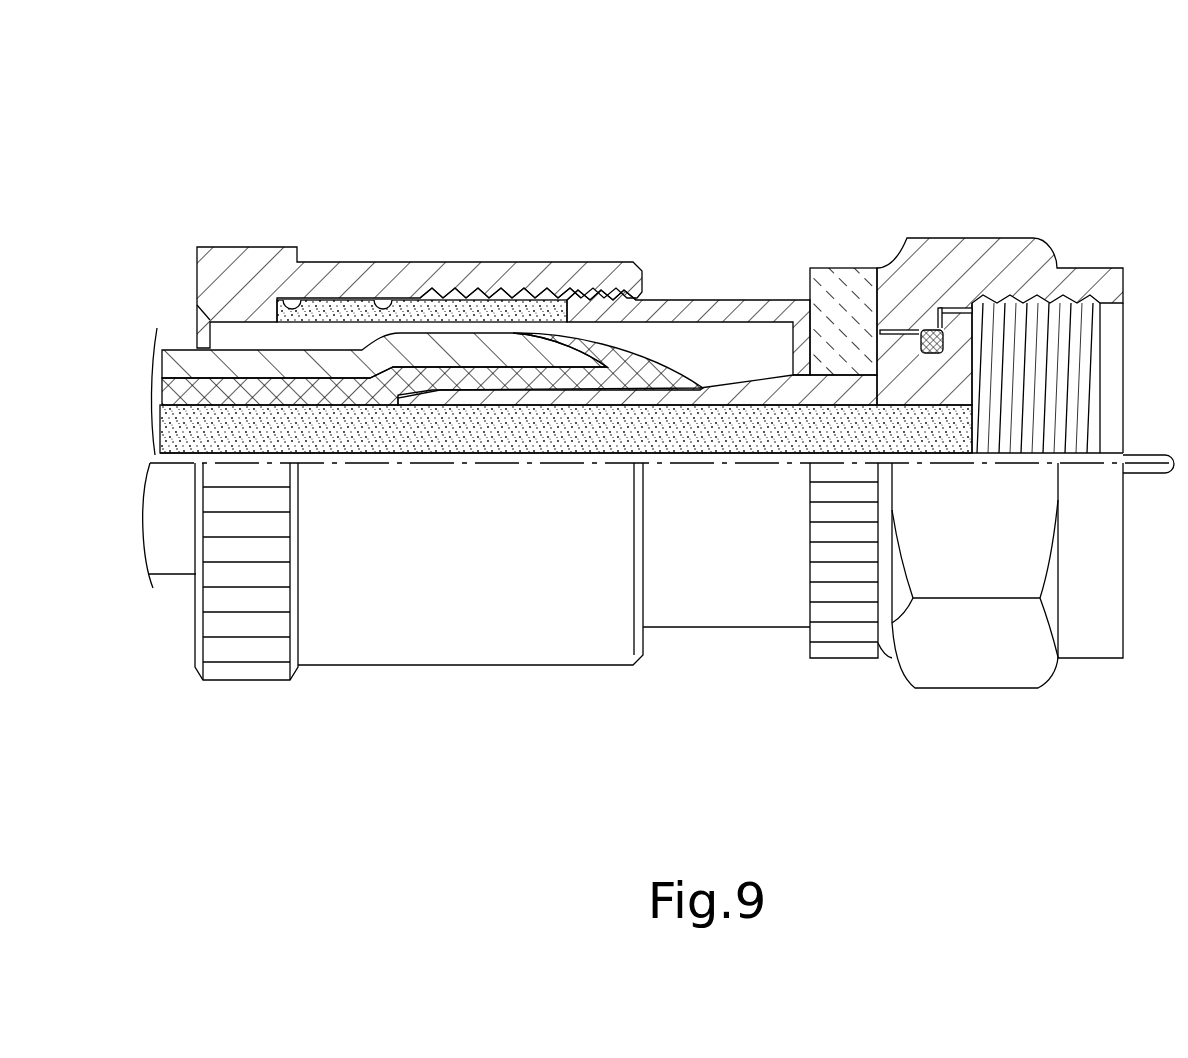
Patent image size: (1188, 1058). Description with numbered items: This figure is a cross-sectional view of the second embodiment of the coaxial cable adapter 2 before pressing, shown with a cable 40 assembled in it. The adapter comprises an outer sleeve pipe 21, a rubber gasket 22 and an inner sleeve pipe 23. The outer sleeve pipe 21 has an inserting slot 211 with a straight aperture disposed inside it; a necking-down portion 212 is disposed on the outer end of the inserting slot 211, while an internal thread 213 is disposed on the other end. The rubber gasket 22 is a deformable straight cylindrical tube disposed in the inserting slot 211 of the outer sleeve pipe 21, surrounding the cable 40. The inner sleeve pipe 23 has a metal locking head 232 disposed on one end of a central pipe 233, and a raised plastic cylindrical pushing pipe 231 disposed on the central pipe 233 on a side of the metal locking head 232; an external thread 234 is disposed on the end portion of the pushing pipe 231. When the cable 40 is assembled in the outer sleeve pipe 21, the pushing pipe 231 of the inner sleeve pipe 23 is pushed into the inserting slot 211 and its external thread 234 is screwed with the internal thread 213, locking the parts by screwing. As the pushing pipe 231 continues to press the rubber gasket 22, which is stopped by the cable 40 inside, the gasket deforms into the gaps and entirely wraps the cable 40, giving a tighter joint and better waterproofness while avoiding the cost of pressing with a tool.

The coaxial connector 2 is at (667, 385).
The outer sleeve pipe 21 is at (523, 272).
The inserting slot 211 is at (403, 302).
The necking-down portion 212 is at (303, 300).
The internal thread 213 is at (463, 290).
The rubber gasket 22 is at (330, 310).
The inner sleeve pipe 23 is at (735, 632).
The pushing pipe 231 is at (762, 310).
The metal locking head 232 is at (1027, 247).
The central pipe 233 is at (700, 387).
The external thread 234 is at (595, 277).
The cable 40 is at (190, 353).